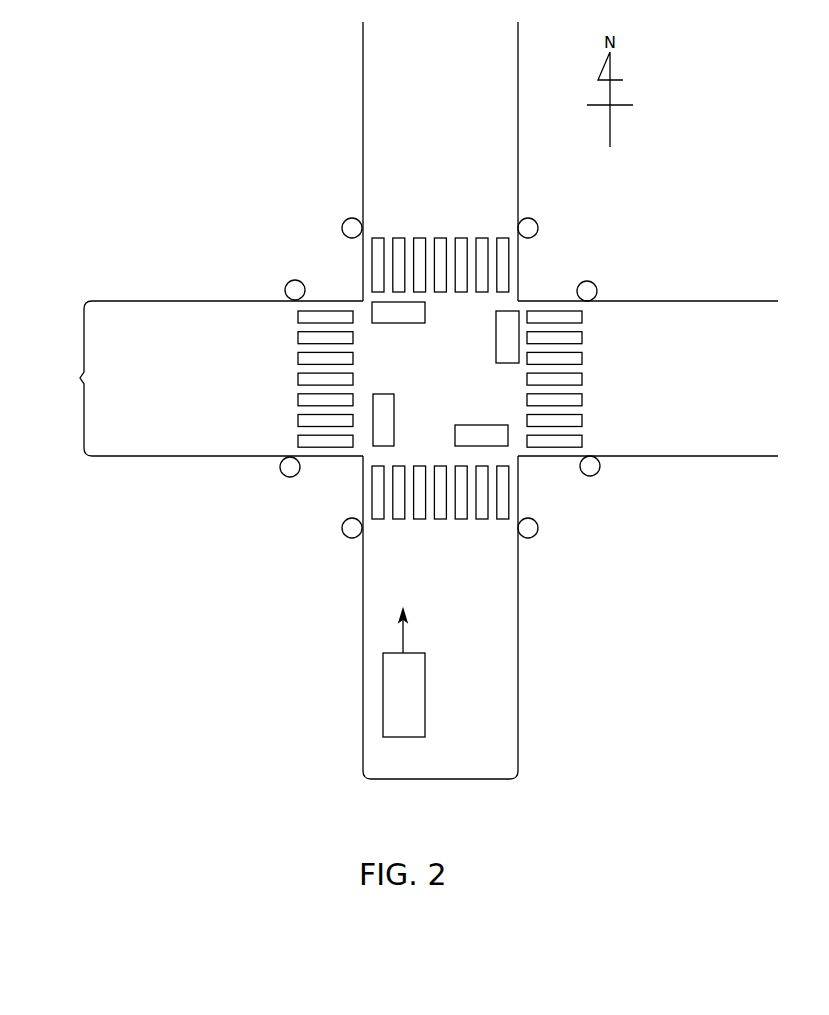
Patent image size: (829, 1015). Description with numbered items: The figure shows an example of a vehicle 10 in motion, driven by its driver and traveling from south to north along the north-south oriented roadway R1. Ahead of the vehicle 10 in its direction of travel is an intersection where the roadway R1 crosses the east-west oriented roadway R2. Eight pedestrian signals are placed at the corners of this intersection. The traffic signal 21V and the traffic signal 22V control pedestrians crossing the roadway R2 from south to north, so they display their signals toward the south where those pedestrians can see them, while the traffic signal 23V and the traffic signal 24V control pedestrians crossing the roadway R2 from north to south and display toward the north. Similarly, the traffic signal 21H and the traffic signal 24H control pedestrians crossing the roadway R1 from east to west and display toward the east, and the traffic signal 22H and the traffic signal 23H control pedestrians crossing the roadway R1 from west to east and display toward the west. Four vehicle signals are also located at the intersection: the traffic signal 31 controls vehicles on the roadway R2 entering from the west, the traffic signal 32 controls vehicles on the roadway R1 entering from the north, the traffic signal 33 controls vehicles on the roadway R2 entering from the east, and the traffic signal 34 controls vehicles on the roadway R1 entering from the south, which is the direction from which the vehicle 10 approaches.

The vehicle 10 is at (425, 710).
The traffic signal 21H is at (345, 221).
The traffic signal 21V is at (288, 284).
The traffic signal 22H is at (535, 221).
The traffic signal 22V is at (594, 284).
The traffic signal 23H is at (535, 535).
The traffic signal 23V is at (597, 473).
The traffic signal 24H is at (345, 535).
The traffic signal 24V is at (284, 473).
The traffic signal 31 is at (496, 328).
The traffic signal 32 is at (468, 425).
The traffic signal 33 is at (394, 410).
The traffic signal 34 is at (415, 323).
The roadway R1 is at (440, 779).
The roadway R2 is at (80, 378).